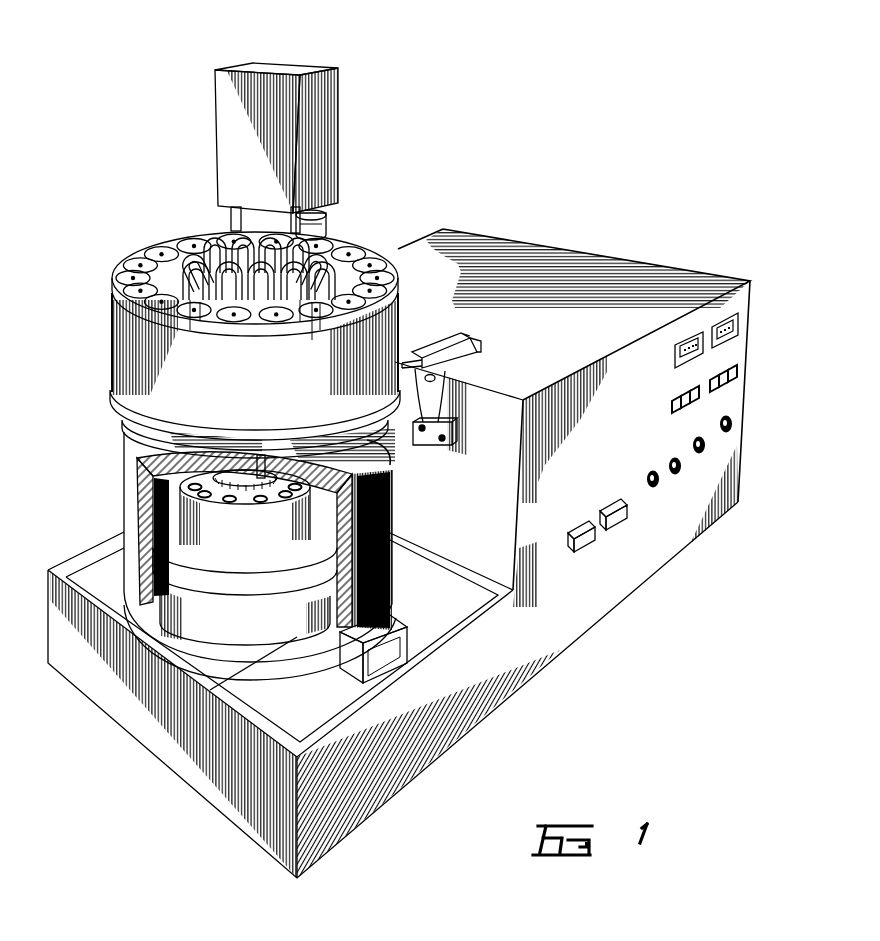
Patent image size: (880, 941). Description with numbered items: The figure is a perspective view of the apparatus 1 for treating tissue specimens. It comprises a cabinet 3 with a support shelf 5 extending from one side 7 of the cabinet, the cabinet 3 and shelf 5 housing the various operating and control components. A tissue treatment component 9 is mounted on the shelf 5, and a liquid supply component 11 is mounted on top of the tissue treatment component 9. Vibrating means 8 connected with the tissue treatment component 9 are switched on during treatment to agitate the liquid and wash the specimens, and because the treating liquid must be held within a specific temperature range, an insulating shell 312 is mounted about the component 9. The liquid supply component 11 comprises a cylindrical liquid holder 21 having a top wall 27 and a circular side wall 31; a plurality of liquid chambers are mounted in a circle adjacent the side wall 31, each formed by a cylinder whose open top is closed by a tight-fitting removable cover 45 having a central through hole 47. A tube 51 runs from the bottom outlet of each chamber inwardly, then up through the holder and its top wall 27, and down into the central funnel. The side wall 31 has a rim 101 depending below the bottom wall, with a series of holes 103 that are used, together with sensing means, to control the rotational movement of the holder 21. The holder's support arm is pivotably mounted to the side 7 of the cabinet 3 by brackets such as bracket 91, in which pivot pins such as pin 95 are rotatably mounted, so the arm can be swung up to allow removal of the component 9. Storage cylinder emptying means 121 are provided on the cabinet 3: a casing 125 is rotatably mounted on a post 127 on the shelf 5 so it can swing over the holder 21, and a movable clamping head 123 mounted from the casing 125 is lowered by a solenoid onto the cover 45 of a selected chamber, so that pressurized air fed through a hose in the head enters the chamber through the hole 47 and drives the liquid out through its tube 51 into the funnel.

The apparatus 1 is at (617, 92).
The cabinet 3 is at (570, 401).
The support shelf 5 is at (102, 562).
The side 7 is at (500, 478).
The vibrating means 8 is at (383, 628).
The tissue treatment component 9 is at (120, 487).
The liquid supply component 11 is at (224, 264).
The cylindrical liquid holder 21 is at (219, 379).
The top wall 27 is at (108, 275).
The circular side wall 31 is at (158, 360).
The cover 45 is at (110, 297).
The through hole 47 is at (160, 248).
The tube 51 is at (352, 250).
The bracket 91 is at (446, 404).
The pivot pin 95 is at (488, 360).
The rim 101 is at (125, 432).
The holes 103 is at (120, 410).
The storage cylinder emptying means 121 is at (292, 151).
The clamping head 123 is at (335, 224).
The casing 125 is at (214, 126).
The post 127 is at (231, 216).
The insulating shell 312 is at (385, 530).